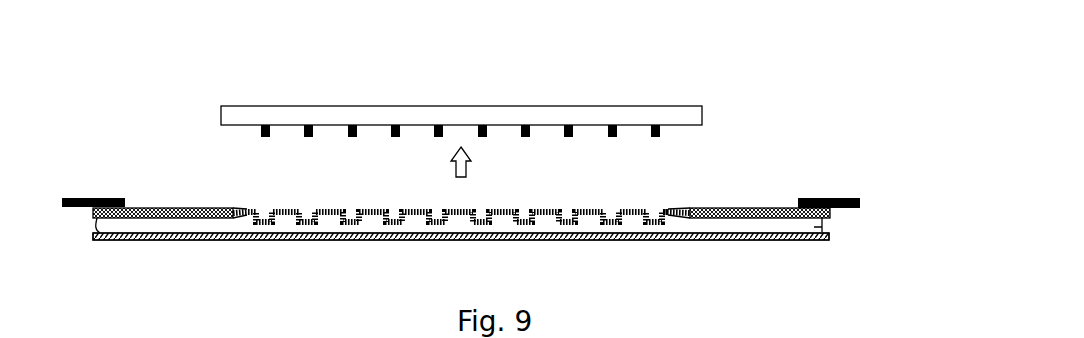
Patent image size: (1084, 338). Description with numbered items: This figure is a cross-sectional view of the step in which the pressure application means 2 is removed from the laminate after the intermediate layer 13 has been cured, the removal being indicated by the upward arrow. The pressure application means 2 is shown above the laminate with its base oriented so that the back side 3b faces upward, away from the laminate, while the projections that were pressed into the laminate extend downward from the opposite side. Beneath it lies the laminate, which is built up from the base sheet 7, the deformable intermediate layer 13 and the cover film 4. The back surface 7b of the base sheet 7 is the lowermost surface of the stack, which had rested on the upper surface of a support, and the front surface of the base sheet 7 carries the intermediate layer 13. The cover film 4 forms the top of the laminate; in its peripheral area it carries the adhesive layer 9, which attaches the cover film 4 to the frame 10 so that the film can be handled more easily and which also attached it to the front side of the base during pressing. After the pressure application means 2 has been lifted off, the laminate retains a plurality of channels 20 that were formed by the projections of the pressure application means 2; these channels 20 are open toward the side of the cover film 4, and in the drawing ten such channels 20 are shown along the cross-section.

The pressure application means 2 is at (660, 105).
The back side of the base 3b is at (287, 104).
The cover film 4 is at (245, 207).
The base sheet 7 is at (753, 248).
The back surface of the base sheet 7b is at (200, 240).
The adhesive layer 9 is at (163, 200).
The frame 10 is at (836, 198).
The deformable intermediate layer 13 is at (822, 227).
The channels 20 is at (658, 208).